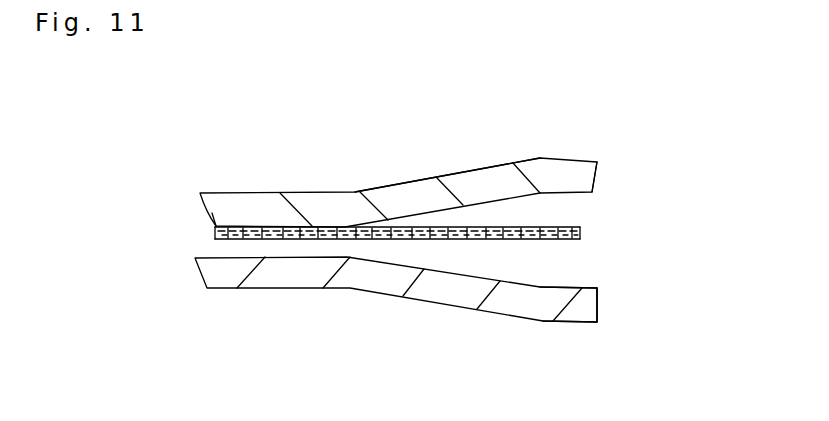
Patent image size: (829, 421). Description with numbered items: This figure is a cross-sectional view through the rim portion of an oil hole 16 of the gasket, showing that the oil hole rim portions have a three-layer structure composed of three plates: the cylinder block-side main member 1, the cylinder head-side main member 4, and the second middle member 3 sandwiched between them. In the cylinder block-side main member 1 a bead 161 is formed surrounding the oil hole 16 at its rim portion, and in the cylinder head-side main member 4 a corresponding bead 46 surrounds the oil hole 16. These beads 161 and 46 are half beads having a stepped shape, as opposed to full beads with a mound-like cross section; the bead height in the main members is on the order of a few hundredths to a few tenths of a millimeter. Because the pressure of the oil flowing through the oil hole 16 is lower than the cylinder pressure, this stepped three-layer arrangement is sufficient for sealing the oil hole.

The cylinder block-side main member 1 is at (187, 283).
The second middle member 3 is at (197, 238).
The cylinder head-side main member 4 is at (207, 213).
The oil hole 16 is at (658, 183).
The half bead around oil hole 46 is at (495, 170).
The half bead around oil hole 161 is at (560, 322).